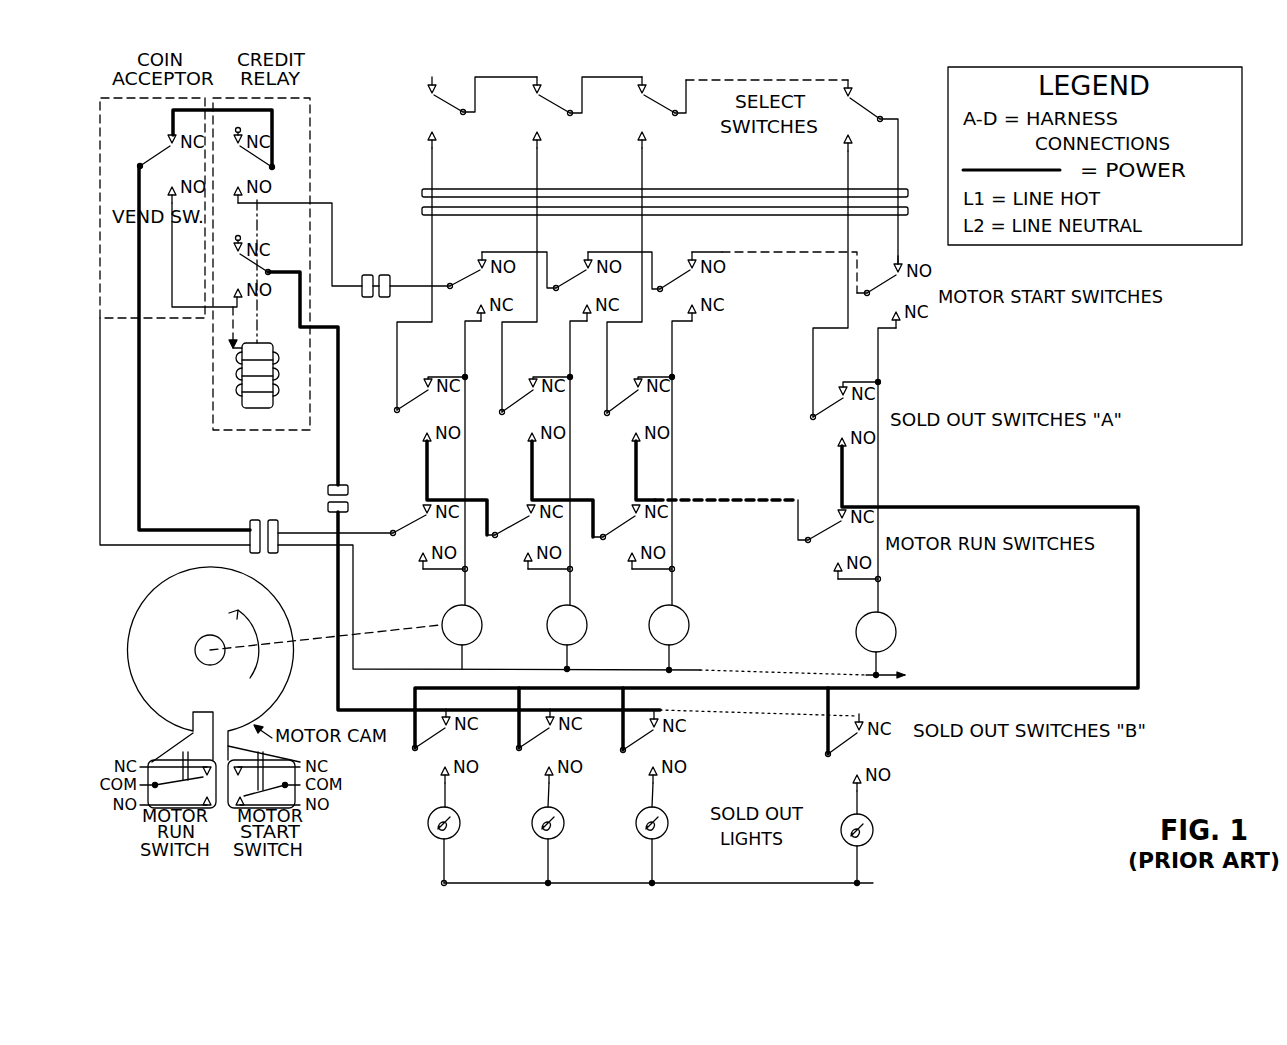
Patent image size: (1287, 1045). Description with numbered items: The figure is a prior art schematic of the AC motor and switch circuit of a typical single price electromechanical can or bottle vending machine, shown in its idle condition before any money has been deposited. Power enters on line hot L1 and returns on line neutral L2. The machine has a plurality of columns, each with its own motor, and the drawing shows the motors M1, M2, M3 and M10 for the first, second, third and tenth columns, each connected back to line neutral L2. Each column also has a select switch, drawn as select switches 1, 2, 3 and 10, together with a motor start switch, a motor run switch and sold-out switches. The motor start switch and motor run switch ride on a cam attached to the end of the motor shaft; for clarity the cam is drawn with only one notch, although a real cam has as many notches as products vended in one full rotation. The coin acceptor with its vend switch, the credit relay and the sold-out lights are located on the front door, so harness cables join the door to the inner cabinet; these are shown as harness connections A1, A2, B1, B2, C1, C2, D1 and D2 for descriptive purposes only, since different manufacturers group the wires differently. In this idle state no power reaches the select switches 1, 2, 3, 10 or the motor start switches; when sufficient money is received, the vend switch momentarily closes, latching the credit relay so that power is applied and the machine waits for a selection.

The column 1 select switch 1 is at (467, 228).
The column 2 select switch 2 is at (572, 229).
The column 3 select switch 3 is at (727, 229).
The column 10 select switch 10 is at (855, 231).
The harness connection A1 is at (648, 192).
The harness connection A2 is at (648, 210).
The harness connection B1 is at (361, 275).
The harness connection B2 is at (392, 275).
The harness connection C1 is at (248, 524).
The harness connection C2 is at (281, 524).
The harness connection D1 is at (349, 481).
The harness connection D2 is at (349, 516).
The line hot L1 is at (305, 472).
The line neutral L2 is at (242, 400).
The column 1 motor M1 is at (462, 637).
The column 2 motor M2 is at (567, 637).
The column 3 motor M3 is at (669, 637).
The column 10 motor M10 is at (876, 643).